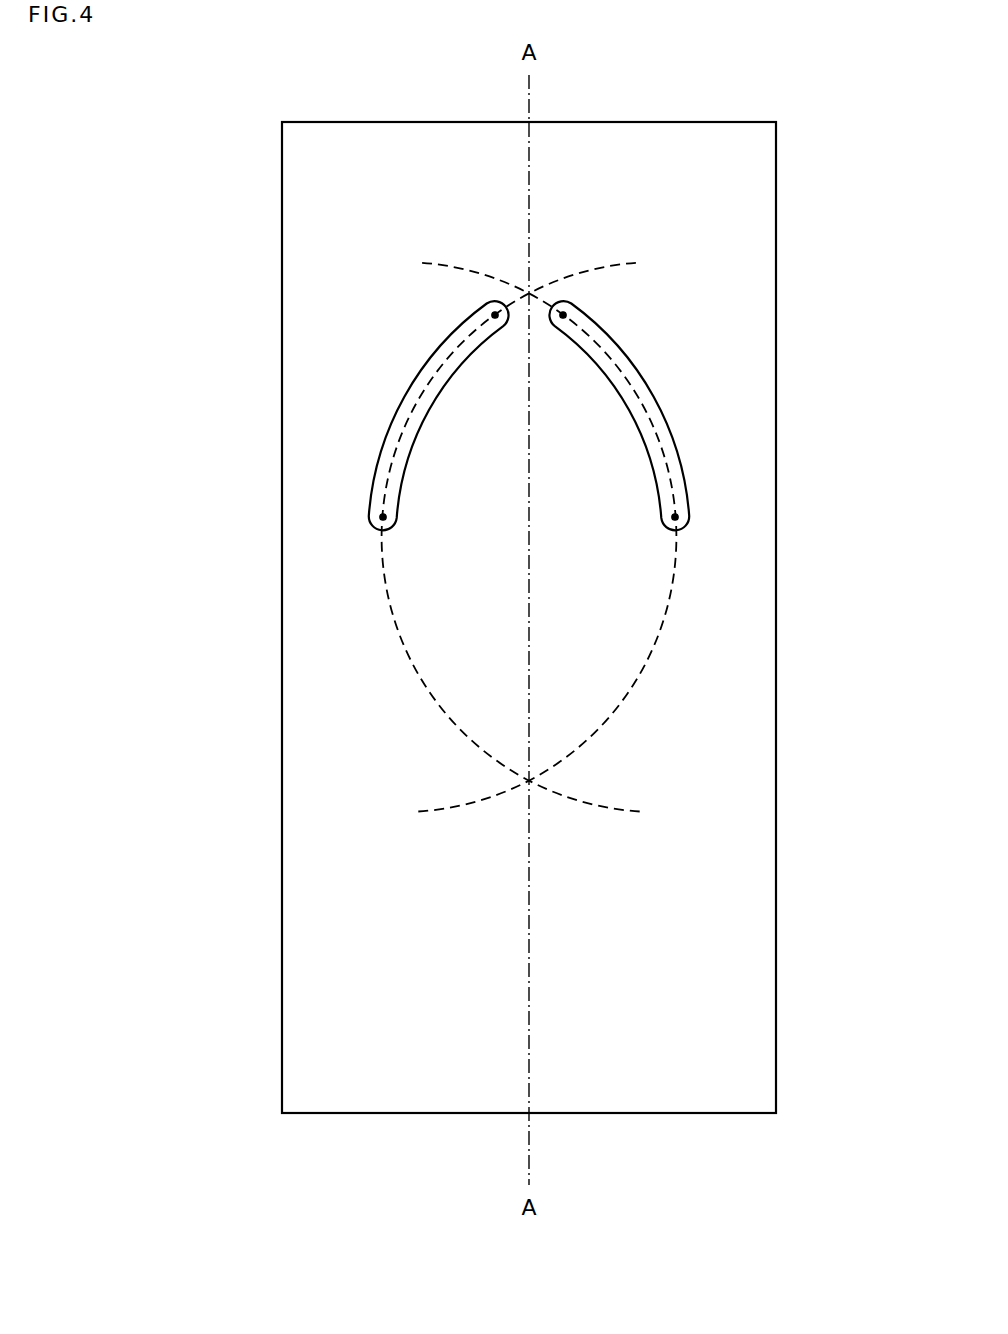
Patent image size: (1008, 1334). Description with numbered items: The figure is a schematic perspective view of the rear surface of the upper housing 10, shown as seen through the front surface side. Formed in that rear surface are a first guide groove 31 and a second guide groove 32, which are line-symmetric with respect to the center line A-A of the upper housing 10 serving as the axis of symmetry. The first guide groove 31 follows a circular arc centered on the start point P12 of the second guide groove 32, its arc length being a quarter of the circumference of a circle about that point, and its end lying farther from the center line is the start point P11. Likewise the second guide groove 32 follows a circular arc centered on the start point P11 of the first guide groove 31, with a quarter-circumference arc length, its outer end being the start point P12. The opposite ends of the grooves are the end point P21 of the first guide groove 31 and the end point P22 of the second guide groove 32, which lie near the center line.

The upper housing 10 is at (776, 188).
The first guide groove 31 is at (436, 370).
The second guide groove 32 is at (637, 367).
The end point of first guide groove P21 is at (500, 308).
The end point of second guide groove P22 is at (556, 306).
The start point of first guide groove P11 is at (383, 516).
The start point of second guide groove P12 is at (686, 515).